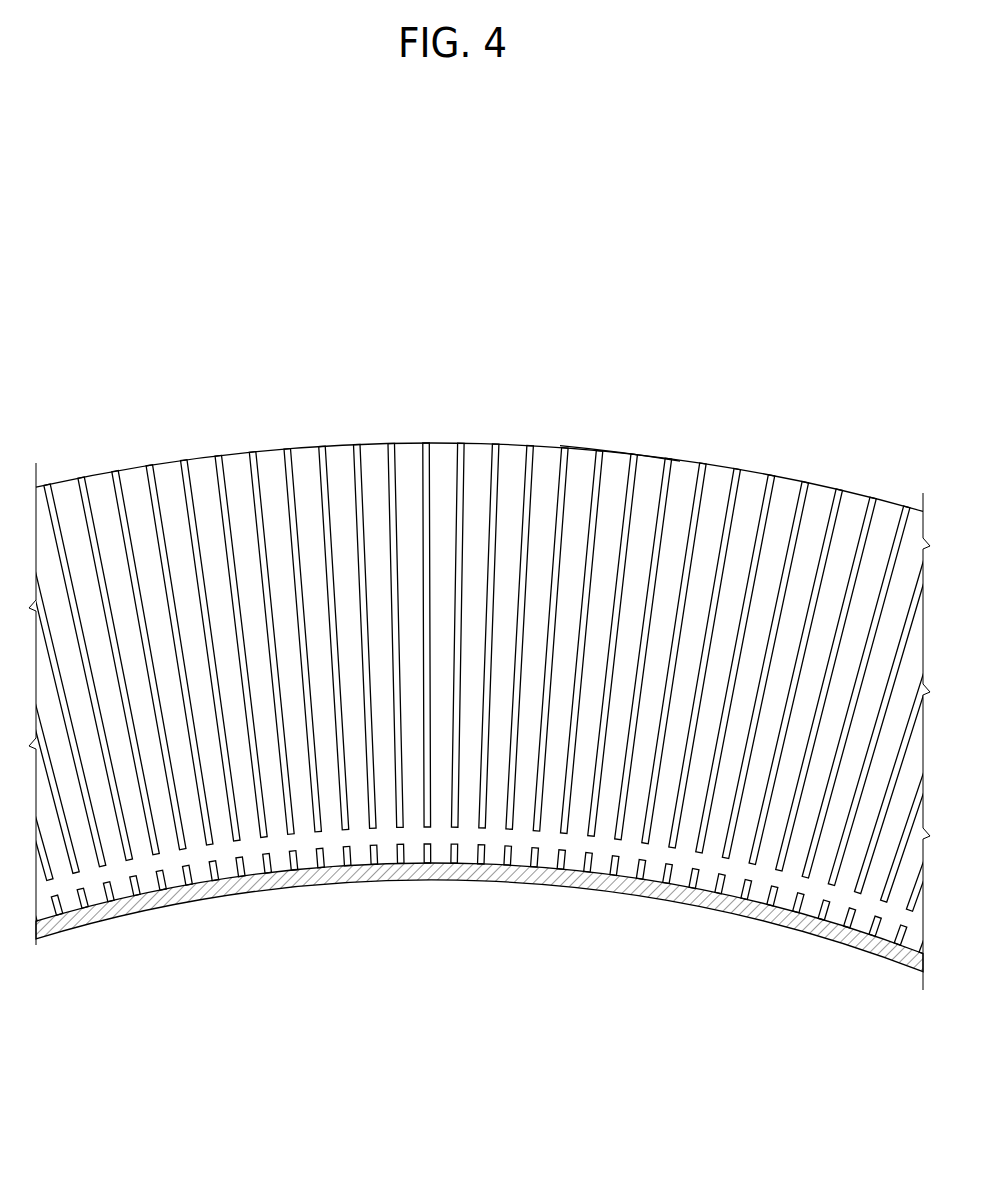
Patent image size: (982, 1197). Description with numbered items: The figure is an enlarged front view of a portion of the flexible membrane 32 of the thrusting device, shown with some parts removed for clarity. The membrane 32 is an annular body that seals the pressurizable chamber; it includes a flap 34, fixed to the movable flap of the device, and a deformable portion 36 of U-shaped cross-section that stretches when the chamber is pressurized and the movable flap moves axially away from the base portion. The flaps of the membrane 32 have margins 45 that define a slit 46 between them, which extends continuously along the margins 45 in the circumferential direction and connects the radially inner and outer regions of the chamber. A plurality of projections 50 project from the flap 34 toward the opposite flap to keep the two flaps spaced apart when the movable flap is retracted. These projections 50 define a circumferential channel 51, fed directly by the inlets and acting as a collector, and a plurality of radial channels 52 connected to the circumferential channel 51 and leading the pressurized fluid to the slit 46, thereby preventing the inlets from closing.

The flexible membrane 32 is at (640, 908).
The flap 34 is at (491, 628).
The deformable portion 36 is at (478, 900).
The margins 45 is at (617, 451).
The slit 46 is at (371, 432).
The projections 50 is at (218, 455).
The circumferential channel 51 is at (500, 836).
The radial channels 52 is at (483, 445).